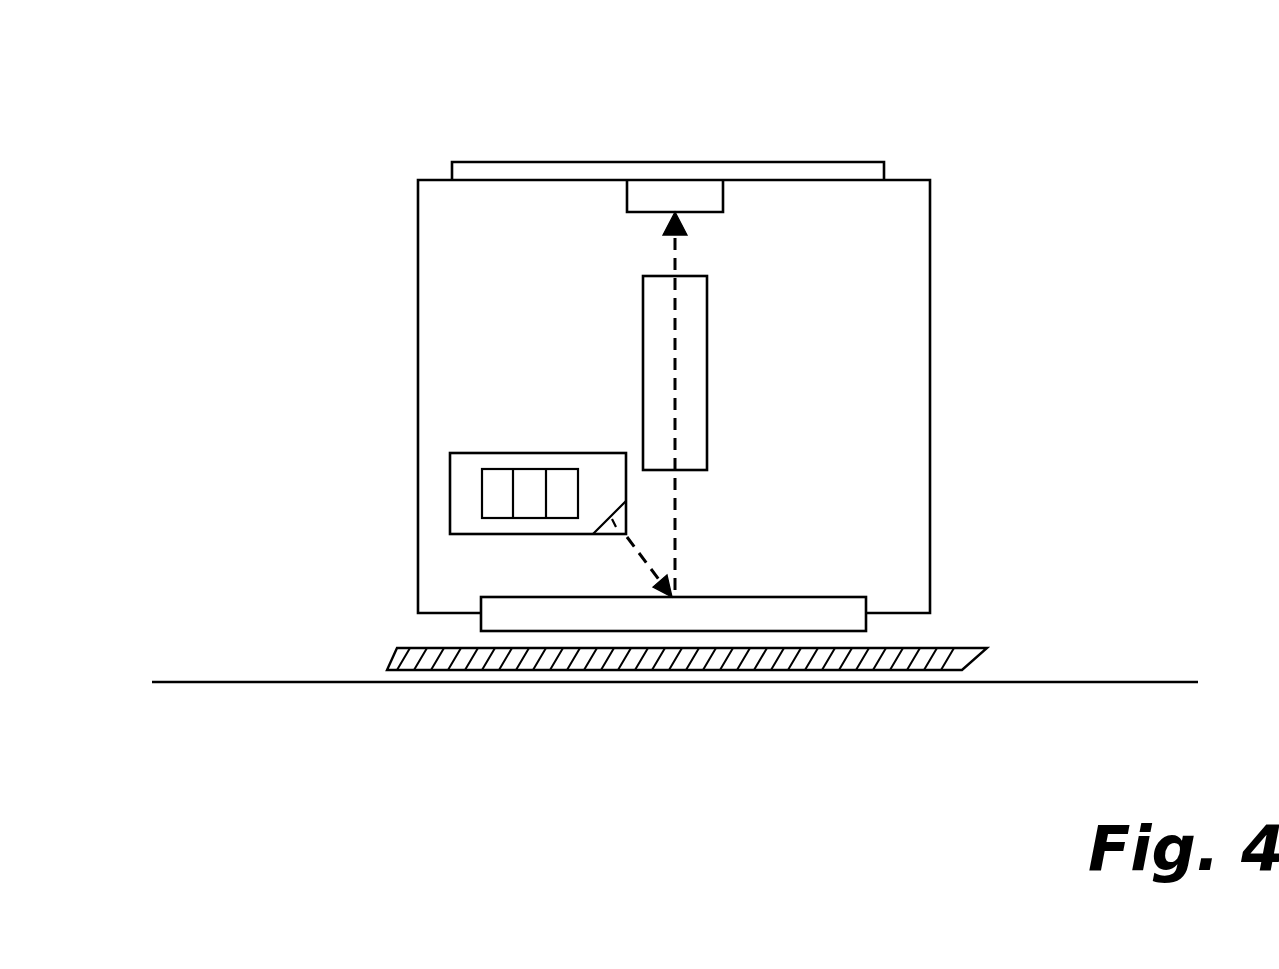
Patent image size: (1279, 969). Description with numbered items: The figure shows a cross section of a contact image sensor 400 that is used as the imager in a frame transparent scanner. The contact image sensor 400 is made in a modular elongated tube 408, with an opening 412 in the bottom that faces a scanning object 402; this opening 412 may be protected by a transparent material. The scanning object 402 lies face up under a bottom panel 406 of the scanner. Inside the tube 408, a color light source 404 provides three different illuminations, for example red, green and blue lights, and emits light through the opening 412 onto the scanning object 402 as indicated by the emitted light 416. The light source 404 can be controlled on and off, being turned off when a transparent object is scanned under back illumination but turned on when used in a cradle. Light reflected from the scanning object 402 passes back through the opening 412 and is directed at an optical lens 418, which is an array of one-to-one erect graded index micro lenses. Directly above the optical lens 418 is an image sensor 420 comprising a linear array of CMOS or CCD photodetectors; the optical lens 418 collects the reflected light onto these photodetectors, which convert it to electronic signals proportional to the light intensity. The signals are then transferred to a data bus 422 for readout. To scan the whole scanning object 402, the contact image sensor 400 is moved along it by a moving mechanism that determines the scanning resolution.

The contact image sensor 400 is at (898, 114).
The scanning object 402 is at (268, 680).
The color light source 404 is at (467, 485).
The bottom panel 406 is at (980, 663).
The modular elongated tube 408 is at (931, 302).
The opening 412 is at (500, 610).
The emitted light 416 is at (648, 565).
The optical lens 418 is at (654, 360).
The image sensor 420 is at (672, 190).
The data bus 422 is at (522, 168).